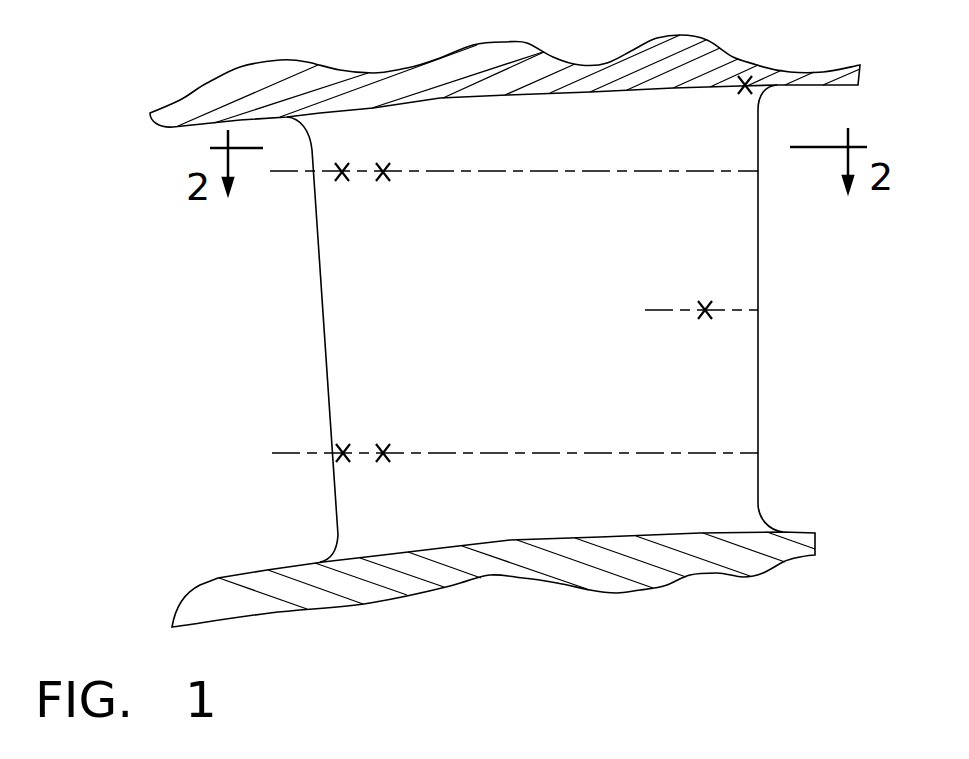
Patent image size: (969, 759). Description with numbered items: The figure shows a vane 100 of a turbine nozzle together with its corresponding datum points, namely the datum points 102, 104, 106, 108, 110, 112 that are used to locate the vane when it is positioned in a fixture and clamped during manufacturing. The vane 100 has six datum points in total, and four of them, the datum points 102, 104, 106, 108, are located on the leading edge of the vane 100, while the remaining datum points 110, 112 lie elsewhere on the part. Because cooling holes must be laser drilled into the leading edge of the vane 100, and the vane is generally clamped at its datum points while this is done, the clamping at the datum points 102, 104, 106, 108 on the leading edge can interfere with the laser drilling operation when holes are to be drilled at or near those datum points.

The vane 100 is at (583, 492).
The datum point 102 is at (340, 182).
The datum point 104 is at (385, 181).
The datum point 106 is at (343, 443).
The datum point 108 is at (385, 443).
The datum point 110 is at (705, 302).
The datum point 112 is at (744, 78).